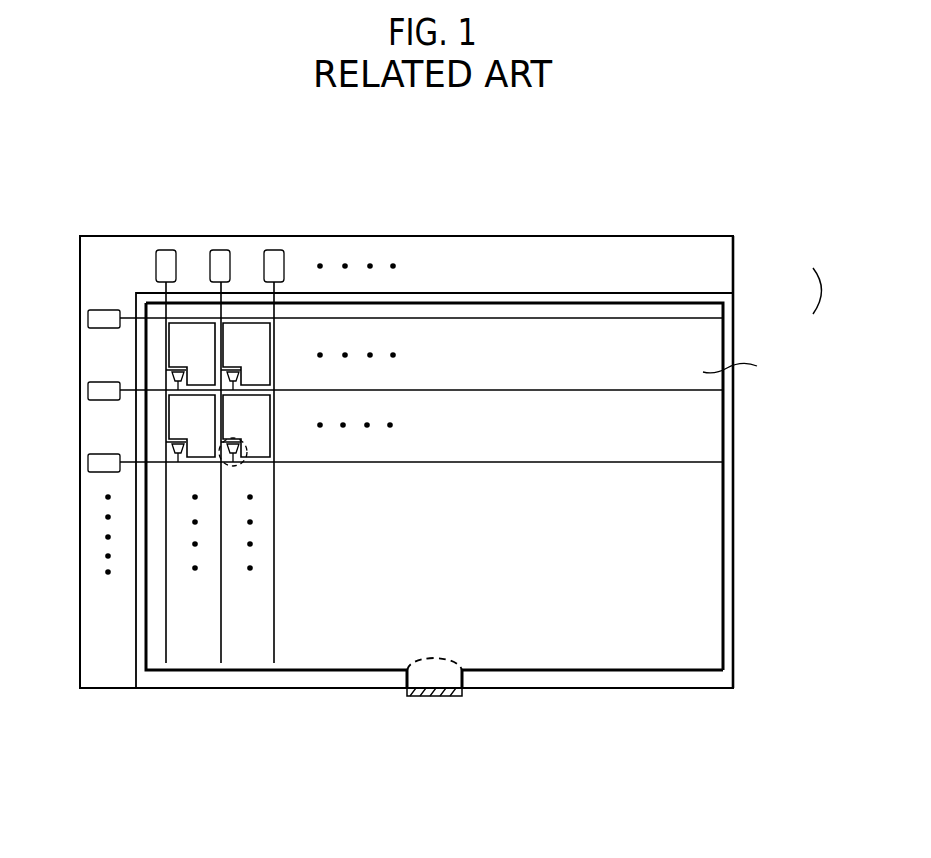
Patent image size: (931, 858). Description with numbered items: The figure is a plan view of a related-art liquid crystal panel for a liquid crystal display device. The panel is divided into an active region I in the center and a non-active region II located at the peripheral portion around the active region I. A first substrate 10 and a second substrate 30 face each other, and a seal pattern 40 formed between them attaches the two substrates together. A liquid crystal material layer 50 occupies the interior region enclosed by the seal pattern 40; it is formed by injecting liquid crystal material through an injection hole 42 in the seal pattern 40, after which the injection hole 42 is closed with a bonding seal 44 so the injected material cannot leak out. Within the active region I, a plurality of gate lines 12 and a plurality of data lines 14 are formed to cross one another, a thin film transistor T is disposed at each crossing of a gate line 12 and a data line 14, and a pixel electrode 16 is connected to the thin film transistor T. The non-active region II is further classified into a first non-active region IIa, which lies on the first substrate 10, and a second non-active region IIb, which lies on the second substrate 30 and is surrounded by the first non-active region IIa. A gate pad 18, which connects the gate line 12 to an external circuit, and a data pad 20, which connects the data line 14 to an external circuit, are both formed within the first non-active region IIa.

The first substrate 10 is at (80, 622).
The second substrate 30 is at (136, 652).
The gate line 12 is at (370, 462).
The data line 14 is at (274, 580).
The pixel electrode 16 is at (272, 408).
The gate pad 18 is at (88, 463).
The data pad 20 is at (165, 250).
The seal pattern 40 is at (190, 670).
The injection hole 42 is at (435, 660).
The bonding seal 44 is at (435, 697).
The liquid crystal material layer 50 is at (683, 607).
The thin film transistor T is at (233, 466).
The active region I is at (735, 367).
The non-active region II is at (826, 291).
The first non-active region IIa is at (733, 268).
The second non-active region IIb is at (723, 330).